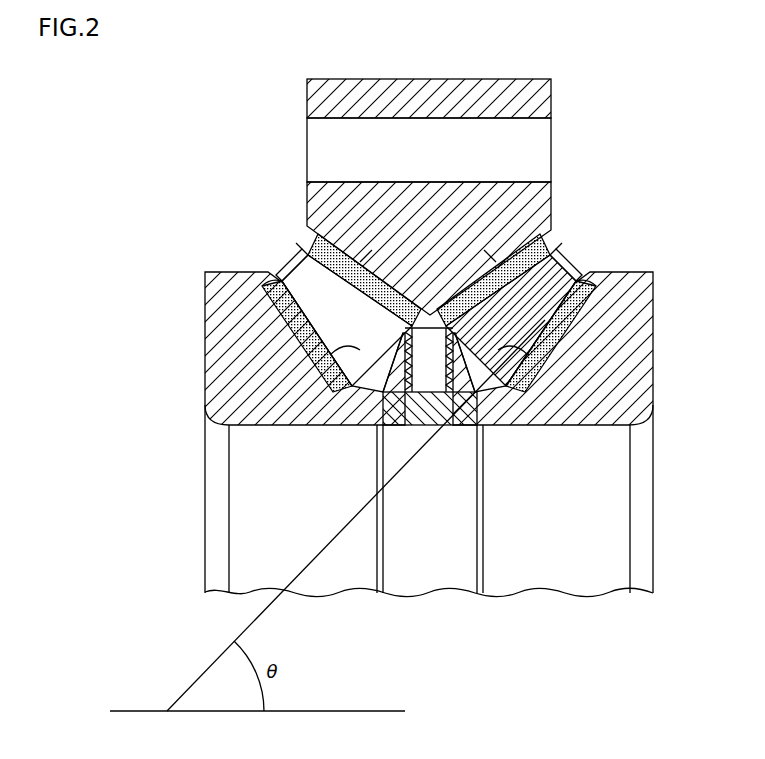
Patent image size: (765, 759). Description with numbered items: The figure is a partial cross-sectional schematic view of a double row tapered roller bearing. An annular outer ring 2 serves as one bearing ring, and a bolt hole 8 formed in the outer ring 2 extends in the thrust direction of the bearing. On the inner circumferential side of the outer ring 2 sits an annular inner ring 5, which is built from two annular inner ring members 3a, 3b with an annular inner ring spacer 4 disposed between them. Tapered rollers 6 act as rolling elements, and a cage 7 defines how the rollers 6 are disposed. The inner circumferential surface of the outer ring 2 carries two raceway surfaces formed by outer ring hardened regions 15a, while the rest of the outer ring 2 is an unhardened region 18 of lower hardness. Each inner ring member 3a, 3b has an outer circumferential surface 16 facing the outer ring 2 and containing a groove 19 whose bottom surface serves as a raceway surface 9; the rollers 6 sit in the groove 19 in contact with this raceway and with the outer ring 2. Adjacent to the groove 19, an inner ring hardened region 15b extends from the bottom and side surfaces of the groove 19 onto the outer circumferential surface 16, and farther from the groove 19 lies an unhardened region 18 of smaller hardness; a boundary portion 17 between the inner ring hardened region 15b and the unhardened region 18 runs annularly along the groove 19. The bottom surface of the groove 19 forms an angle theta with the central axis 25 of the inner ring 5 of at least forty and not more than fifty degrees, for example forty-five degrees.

The outer ring 2 is at (552, 100).
The bolt hole 8 is at (552, 122).
The unhardened region 18 is at (413, 243).
The outer ring hardened regions 15a is at (345, 237).
The inner ring hardened region 15b is at (300, 368).
The raceway surface 9 is at (365, 258).
The roller 6 is at (335, 290).
The cage 7 is at (290, 264).
The groove 19 is at (273, 305).
The outer circumferential surface 16 is at (340, 340).
The boundary portion 17 is at (385, 378).
The inner ring member 3a is at (510, 593).
The inner ring member 3b is at (350, 593).
The inner ring spacer 4 is at (435, 593).
The inner ring 5 is at (360, 658).
The central axis 25 is at (152, 711).